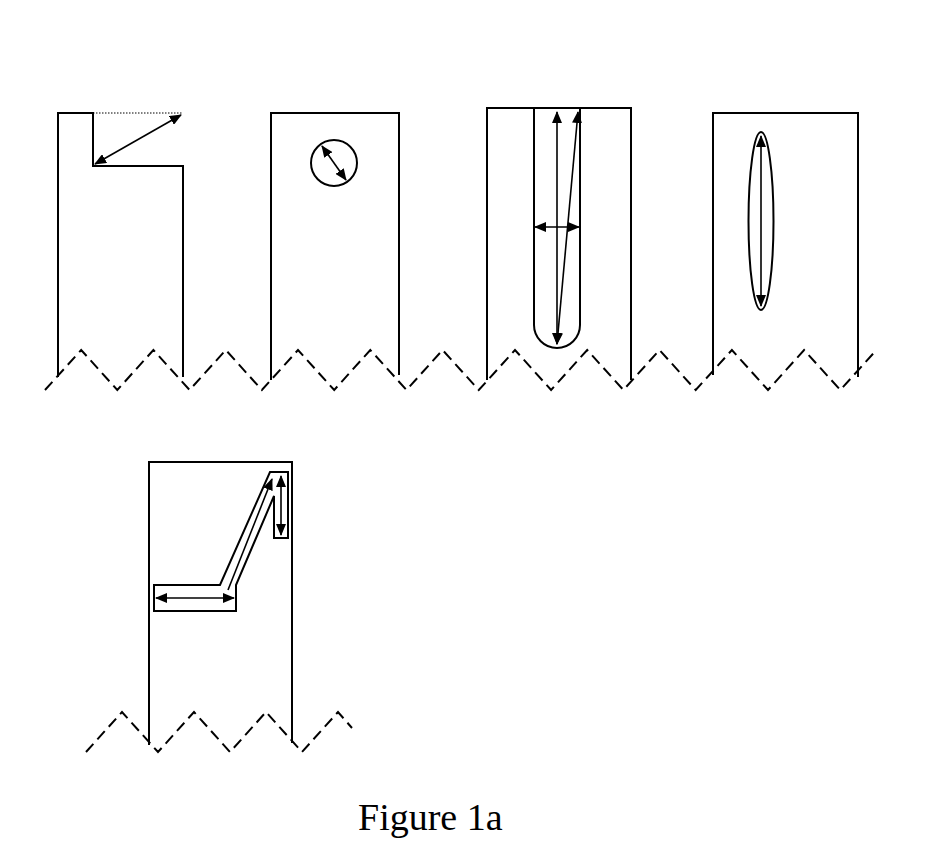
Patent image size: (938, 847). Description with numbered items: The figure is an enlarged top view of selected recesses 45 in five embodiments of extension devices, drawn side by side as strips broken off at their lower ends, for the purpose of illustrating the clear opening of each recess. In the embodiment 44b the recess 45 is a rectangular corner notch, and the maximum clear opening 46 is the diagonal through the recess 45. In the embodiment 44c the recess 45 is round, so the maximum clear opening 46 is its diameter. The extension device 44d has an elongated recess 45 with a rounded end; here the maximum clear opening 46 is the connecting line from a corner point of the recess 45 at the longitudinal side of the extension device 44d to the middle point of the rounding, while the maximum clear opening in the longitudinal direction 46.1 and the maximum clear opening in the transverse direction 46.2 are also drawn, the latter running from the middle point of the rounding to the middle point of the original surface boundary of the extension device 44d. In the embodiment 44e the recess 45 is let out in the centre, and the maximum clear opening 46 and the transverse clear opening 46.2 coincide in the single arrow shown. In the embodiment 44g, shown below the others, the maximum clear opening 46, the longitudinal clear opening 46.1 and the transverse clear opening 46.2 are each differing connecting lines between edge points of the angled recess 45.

The extension device embodiment 44b is at (58, 207).
The extension device embodiment 44c is at (271, 262).
The extension device 44d is at (502, 108).
The extension device embodiment 44e is at (730, 113).
The extension device embodiment 44g is at (149, 665).
The recess 45 is at (113, 132).
The maximum clear opening 46 is at (180, 113).
The maximum clear opening in the longitudinal direction 46.1 is at (547, 227).
The maximum clear opening in the transverse direction 46.2 is at (558, 112).